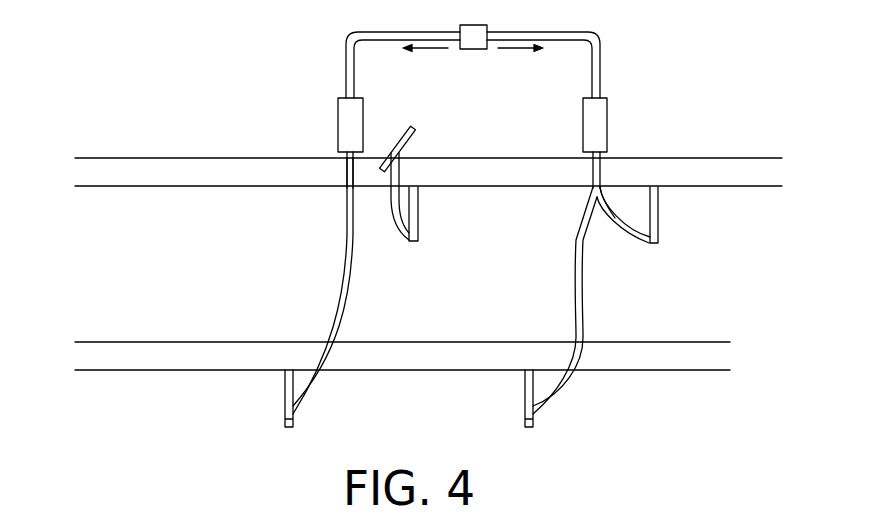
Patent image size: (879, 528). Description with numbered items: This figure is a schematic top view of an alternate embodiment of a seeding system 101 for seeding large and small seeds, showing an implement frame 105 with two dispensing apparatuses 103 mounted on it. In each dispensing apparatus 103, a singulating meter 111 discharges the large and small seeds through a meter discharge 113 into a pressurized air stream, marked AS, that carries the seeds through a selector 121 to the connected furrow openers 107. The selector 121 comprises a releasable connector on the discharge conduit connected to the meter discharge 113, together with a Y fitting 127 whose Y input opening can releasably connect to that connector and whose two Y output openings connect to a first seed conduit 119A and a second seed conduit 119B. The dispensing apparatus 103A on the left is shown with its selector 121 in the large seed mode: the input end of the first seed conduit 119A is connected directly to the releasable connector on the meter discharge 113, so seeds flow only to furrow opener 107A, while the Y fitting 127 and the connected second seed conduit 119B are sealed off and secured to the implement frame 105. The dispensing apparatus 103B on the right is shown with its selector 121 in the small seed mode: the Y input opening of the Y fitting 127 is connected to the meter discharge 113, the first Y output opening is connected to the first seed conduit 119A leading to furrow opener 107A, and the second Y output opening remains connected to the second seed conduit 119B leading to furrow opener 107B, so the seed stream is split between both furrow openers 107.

The seeding system 101 is at (296, 62).
The dispensing apparatus 103 is at (694, 102).
The dispensing apparatus 103A is at (307, 128).
The dispensing apparatus 103B is at (694, 102).
The implement frame 105 is at (118, 188).
The furrow opener 107 is at (331, 402).
The furrow opener 107A is at (525, 421).
The furrow opener 107B is at (420, 240).
The singulating meter 111 is at (608, 112).
The meter discharge 113 is at (375, 128).
The first seed conduit 119A is at (462, 300).
The second seed conduit 119B is at (514, 225).
The selector 121 is at (583, 174).
The Y fitting 127 is at (400, 170).